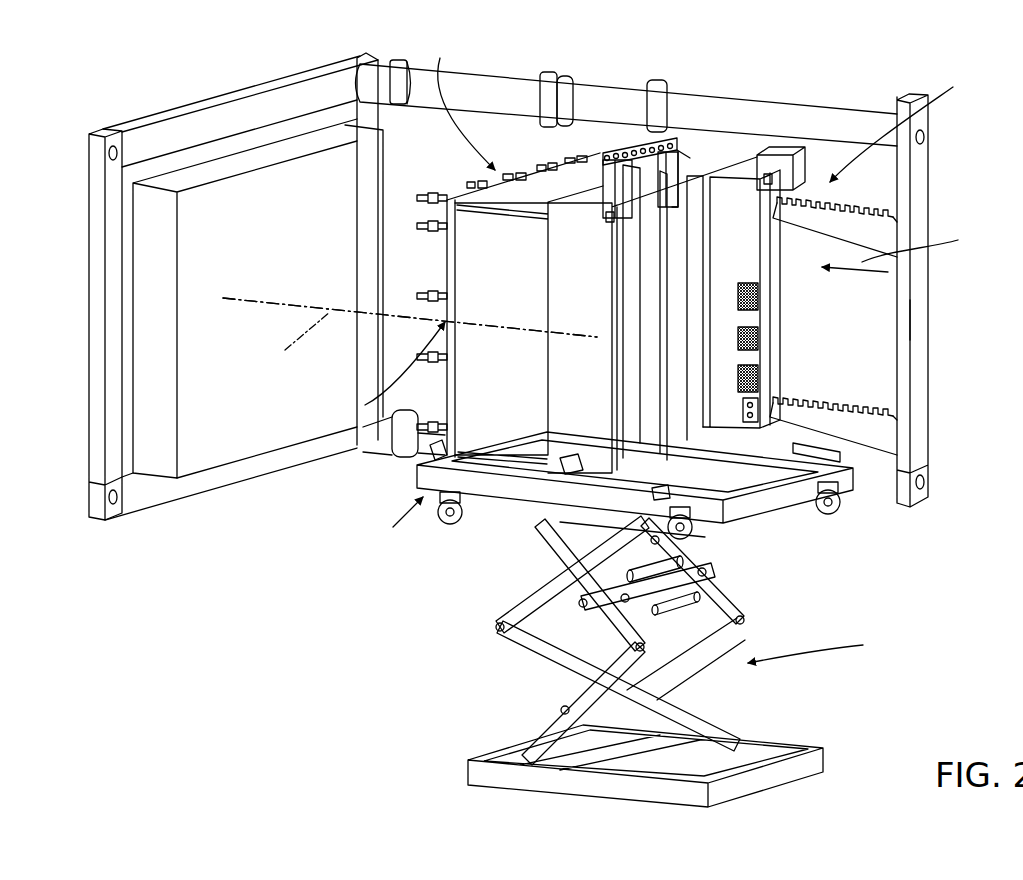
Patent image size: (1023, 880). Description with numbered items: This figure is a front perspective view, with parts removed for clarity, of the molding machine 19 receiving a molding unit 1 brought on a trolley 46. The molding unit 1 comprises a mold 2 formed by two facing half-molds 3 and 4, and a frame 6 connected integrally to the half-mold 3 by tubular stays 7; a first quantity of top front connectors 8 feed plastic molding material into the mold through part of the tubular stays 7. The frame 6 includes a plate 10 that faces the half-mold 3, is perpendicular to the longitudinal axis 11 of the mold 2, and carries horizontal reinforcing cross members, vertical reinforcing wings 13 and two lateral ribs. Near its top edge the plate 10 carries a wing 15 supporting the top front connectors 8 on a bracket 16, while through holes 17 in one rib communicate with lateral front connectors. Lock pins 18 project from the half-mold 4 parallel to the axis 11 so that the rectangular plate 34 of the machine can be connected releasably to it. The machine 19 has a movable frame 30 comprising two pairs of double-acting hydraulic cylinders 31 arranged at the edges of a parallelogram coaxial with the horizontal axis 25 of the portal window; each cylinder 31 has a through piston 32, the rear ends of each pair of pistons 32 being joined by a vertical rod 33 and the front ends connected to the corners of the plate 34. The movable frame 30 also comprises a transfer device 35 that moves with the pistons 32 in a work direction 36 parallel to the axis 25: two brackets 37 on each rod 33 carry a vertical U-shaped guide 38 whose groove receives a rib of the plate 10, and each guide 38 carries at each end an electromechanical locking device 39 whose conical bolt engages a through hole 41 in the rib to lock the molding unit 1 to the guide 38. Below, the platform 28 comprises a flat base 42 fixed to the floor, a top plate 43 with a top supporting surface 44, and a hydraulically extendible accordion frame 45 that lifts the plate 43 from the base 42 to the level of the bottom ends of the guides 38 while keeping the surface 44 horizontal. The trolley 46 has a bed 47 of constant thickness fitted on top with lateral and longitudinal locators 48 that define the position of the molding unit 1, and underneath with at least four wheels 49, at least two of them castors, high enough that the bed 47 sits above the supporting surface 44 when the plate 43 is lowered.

The molding unit 1 is at (460, 102).
The mold 2 is at (395, 369).
The half-mold 3 is at (477, 200).
The half-mold 4 is at (447, 260).
The frame 6 is at (547, 360).
The tubular stays 7 is at (517, 210).
The top front connectors 8 is at (637, 143).
The plate 10 is at (672, 230).
The longitudinal axis 11 is at (410, 335).
The reinforcing wings 13 is at (645, 335).
The wing 15 is at (588, 197).
The bracket 16 is at (680, 163).
The through holes 17 is at (760, 297).
The lock pins 18 is at (417, 298).
The machine 19 is at (495, 62).
The horizontal axis 25 is at (410, 317).
The platform 28 is at (822, 646).
The movable frame 30 is at (823, 100).
The double-acting hydraulic cylinders 31 is at (530, 103).
The through piston 32 is at (850, 120).
The vertical rod 33 is at (920, 325).
The rectangular plate 34 is at (200, 468).
The transfer device 35 is at (902, 123).
The work direction 36 is at (905, 247).
The brackets 37 is at (850, 220).
The vertical guide 38 is at (765, 365).
The electromechanical locking device 39 is at (784, 140).
The through hole 41 is at (767, 180).
The base 42 is at (817, 762).
The top plate 43 is at (770, 502).
The top supporting surface 44 is at (805, 462).
The hydraulically extendible accordion frame 45 is at (517, 667).
The trolley 46 is at (400, 528).
The bed 47 is at (607, 488).
The lateral and longitudinal locators 48 is at (440, 447).
The wheels 49 is at (448, 520).